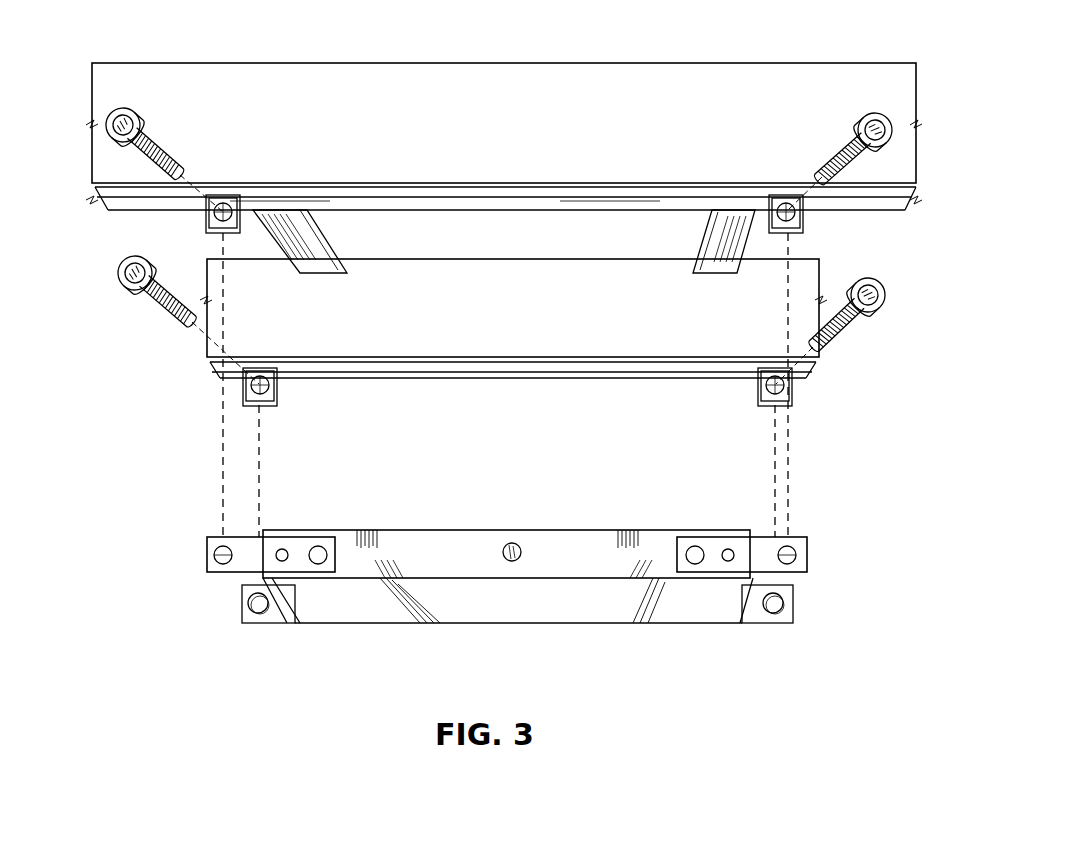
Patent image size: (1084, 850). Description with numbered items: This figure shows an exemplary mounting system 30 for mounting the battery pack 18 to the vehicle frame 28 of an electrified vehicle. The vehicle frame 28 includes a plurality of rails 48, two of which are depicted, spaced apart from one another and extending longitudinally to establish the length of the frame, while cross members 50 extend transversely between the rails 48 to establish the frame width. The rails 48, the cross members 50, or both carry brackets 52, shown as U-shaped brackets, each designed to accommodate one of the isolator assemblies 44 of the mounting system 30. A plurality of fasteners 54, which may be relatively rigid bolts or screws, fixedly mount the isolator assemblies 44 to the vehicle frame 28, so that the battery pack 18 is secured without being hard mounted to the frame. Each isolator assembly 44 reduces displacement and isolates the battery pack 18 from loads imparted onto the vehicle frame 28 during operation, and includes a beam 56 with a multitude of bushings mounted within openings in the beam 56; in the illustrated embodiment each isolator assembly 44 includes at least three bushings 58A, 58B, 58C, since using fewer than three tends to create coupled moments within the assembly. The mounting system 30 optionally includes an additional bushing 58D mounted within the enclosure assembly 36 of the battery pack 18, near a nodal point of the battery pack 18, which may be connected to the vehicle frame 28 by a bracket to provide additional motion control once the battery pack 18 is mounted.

The battery pack 18 is at (434, 550).
The vehicle frame 28 is at (818, 42).
The mounting system 30 is at (205, 604).
The enclosure assembly 36 is at (530, 603).
The isolator assembly 44 is at (300, 530).
The rail 48 is at (467, 72).
The cross member 50 is at (325, 235).
The bracket 52 is at (206, 224).
The fastener 54 is at (106, 128).
The beam 56 is at (207, 550).
The bushing 58A is at (221, 553).
The bushing 58B is at (282, 561).
The bushing 58C is at (320, 548).
The additional bushing 58D is at (510, 544).